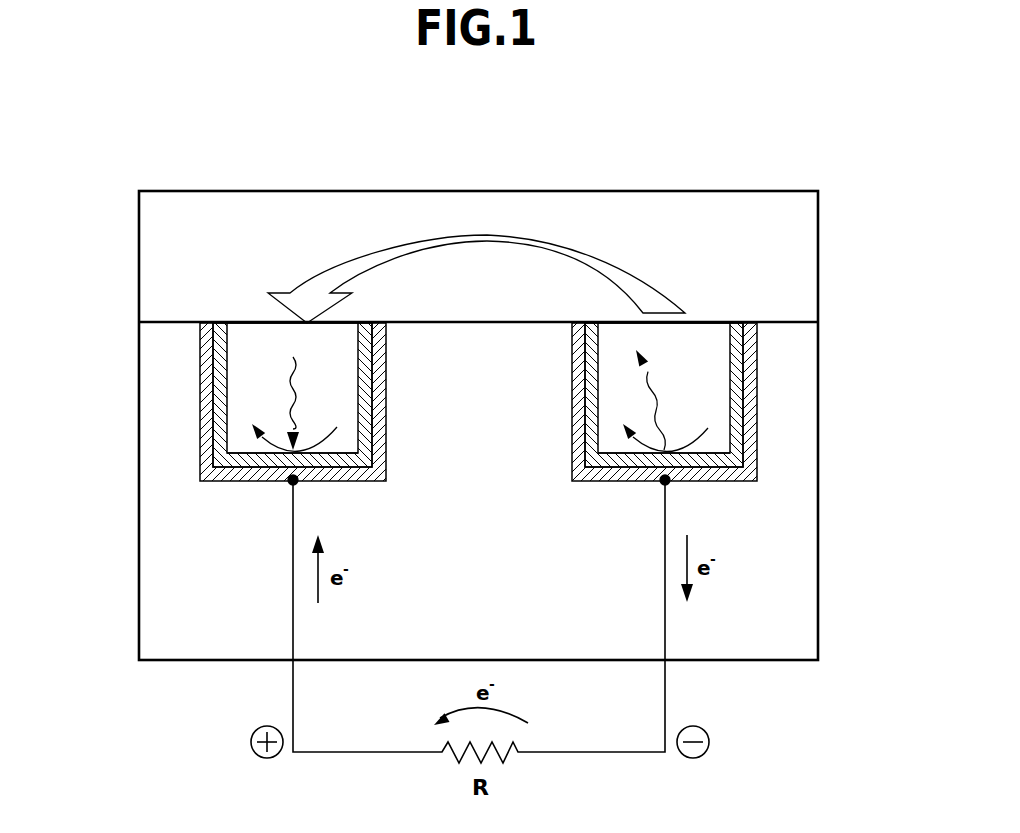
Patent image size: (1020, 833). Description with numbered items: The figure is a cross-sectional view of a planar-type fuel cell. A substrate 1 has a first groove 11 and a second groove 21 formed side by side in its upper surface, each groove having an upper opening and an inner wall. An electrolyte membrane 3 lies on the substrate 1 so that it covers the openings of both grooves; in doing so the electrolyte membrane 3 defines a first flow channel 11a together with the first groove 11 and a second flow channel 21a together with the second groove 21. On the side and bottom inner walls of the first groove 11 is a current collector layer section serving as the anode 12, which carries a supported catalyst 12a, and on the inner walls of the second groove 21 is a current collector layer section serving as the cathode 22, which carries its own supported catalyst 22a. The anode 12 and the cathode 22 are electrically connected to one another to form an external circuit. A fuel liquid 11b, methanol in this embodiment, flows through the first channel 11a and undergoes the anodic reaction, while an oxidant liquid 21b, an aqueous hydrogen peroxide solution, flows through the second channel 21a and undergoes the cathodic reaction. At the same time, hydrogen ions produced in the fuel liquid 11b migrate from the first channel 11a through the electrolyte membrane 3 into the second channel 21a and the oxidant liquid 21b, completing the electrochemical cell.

The substrate 1 is at (773, 660).
The electrolyte membrane 3 is at (793, 245).
The first groove 11 is at (739, 423).
The first flow channel 11a is at (703, 337).
The fuel liquid 11b is at (718, 442).
The current collector layer section (anode) 12 is at (750, 395).
The catalyst 12a is at (757, 347).
The second groove 21 is at (216, 426).
The second flow channel 21a is at (253, 337).
The oxidant liquid 21b is at (240, 442).
The current collector layer section (cathode) 22 is at (210, 393).
The catalyst 22a is at (220, 350).